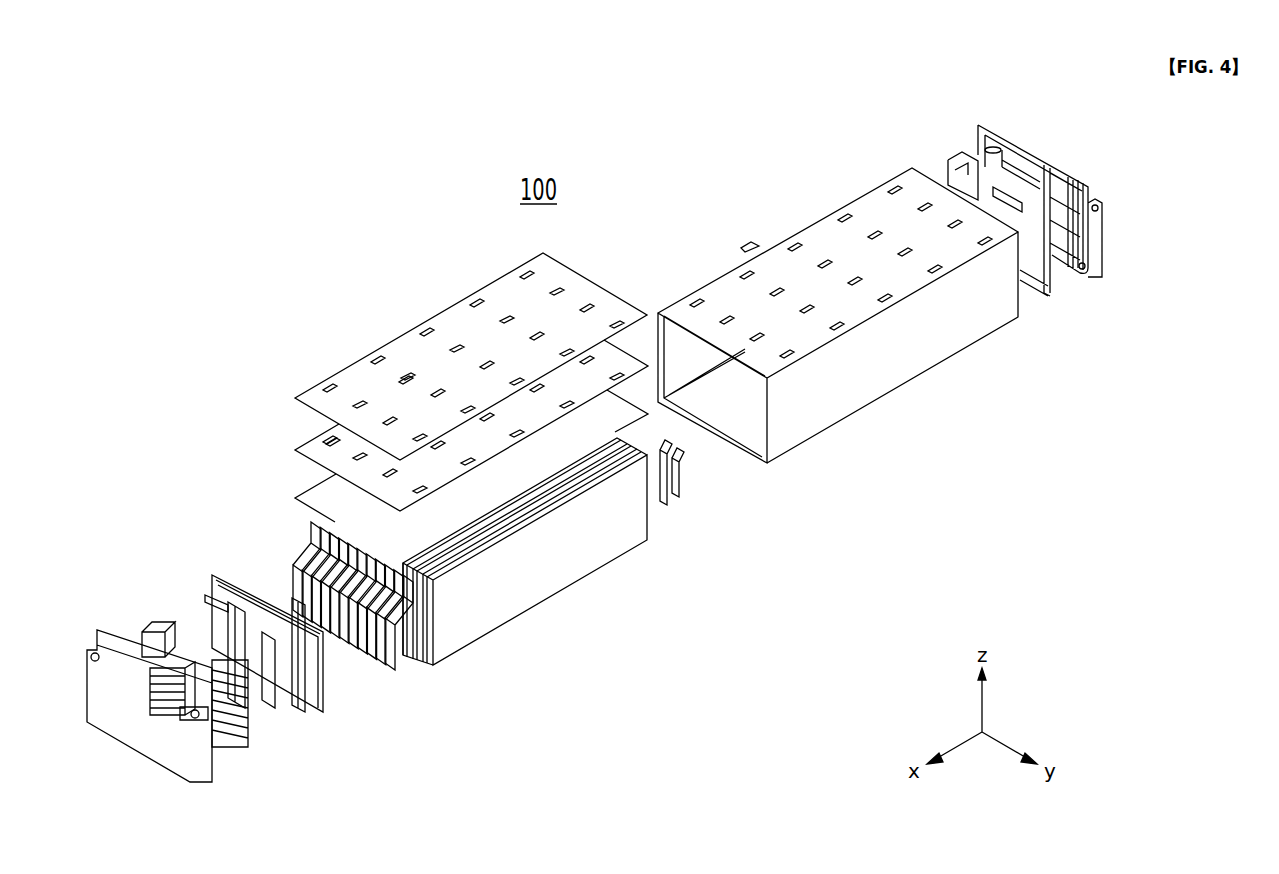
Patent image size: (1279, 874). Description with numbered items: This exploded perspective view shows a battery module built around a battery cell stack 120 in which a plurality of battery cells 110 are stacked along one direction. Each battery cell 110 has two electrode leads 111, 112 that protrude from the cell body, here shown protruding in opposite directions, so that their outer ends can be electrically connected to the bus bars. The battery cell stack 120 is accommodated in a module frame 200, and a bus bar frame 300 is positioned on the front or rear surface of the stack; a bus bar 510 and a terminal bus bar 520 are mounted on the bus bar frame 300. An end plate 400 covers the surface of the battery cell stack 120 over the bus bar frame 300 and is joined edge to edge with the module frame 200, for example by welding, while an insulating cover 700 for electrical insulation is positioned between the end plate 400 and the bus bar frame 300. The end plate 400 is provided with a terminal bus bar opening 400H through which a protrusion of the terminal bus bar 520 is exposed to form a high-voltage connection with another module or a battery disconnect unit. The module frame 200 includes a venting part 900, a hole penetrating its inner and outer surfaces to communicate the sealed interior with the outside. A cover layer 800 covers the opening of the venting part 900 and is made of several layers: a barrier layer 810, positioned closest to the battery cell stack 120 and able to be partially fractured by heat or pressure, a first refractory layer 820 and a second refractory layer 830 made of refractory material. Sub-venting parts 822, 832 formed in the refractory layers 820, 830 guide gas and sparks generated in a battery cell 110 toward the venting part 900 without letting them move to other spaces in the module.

The battery cell 110 is at (531, 561).
The electrode lead 111 is at (295, 570).
The electrode lead 112 is at (680, 467).
The battery cell stack 120 is at (448, 665).
The module frame 200 is at (880, 375).
The bus bar frame 300 is at (230, 639).
The end plate 400 is at (588, 455).
The terminal bus bar opening 400H is at (165, 722).
The bus bar 510 is at (270, 690).
The terminal bus bar 520 is at (210, 598).
The insulating cover 700 is at (949, 160).
The cover layer 800 is at (386, 387).
The barrier layer 810 is at (412, 456).
The first refractory layer 820 is at (295, 450).
The sub-venting part 822 is at (335, 440).
The second refractory layer 830 is at (295, 398).
The sub-venting part 832 is at (408, 378).
The venting part 900 is at (797, 245).